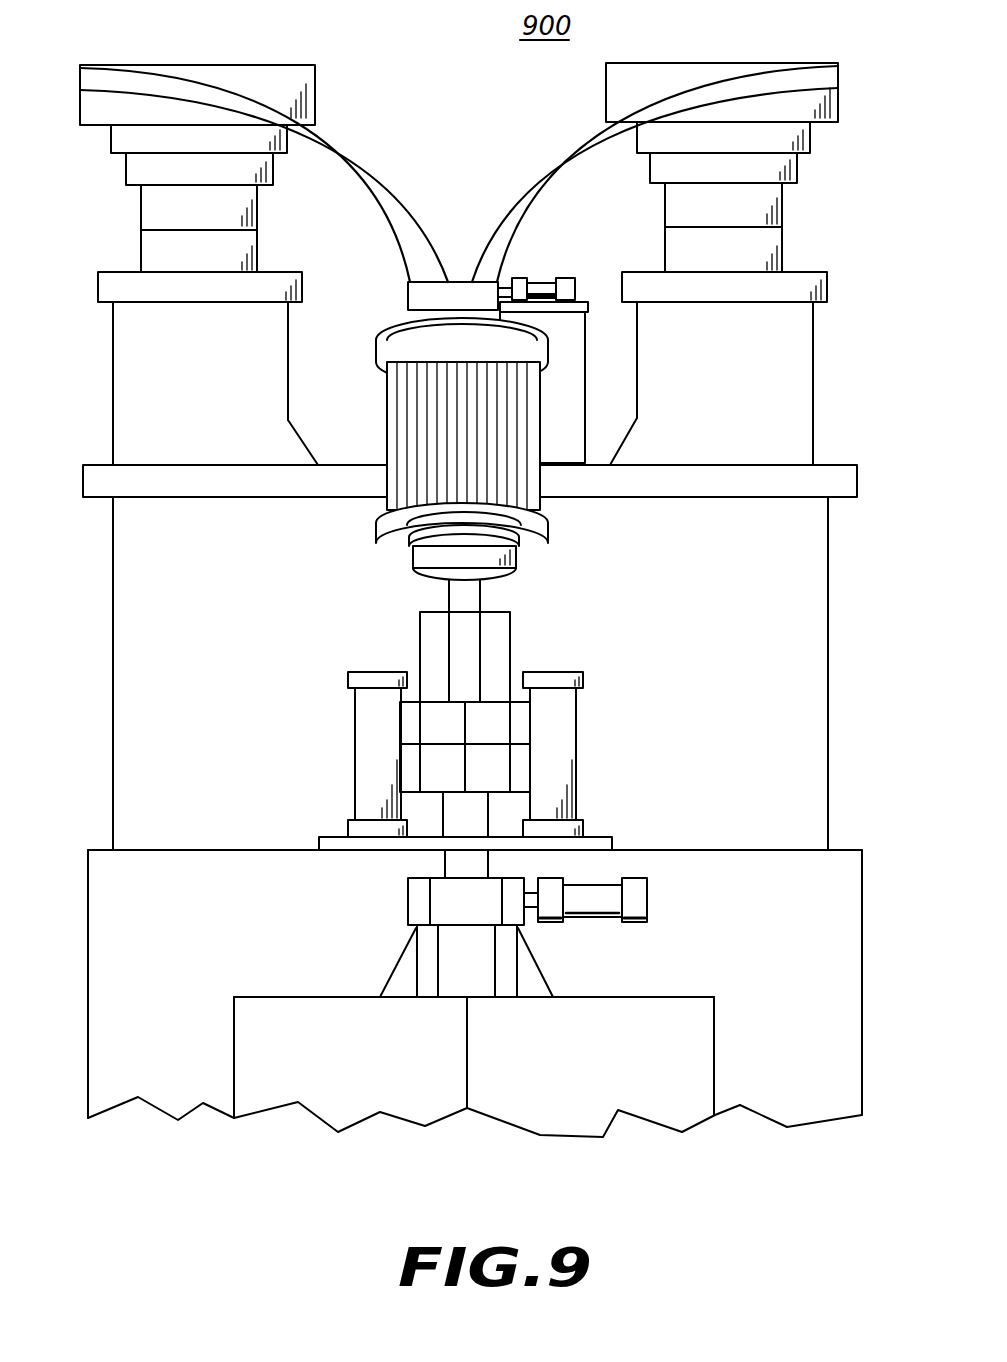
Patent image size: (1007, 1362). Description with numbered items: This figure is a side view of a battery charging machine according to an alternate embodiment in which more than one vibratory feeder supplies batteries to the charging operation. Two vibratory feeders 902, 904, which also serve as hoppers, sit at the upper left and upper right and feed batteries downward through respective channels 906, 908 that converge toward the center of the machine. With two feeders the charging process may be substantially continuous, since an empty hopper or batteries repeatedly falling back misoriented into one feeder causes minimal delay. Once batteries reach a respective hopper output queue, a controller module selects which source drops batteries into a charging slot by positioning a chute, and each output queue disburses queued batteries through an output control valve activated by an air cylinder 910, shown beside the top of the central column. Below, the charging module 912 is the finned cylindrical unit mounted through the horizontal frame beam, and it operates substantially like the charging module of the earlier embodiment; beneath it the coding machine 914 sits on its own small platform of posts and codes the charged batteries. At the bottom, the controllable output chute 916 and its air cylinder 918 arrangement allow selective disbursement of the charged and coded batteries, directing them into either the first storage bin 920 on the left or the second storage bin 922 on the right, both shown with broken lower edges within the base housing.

The vibratory feeder 902 is at (277, 68).
The vibratory feeder 904 is at (630, 68).
The channel 906 is at (357, 160).
The channel 908 is at (543, 180).
The air cylinder 910 is at (535, 278).
The charging module 912 is at (368, 537).
The coding machine 914 is at (503, 779).
The controllable output chute 916 is at (438, 862).
The air cylinder 918 is at (582, 918).
The first storage bin 920 is at (348, 1005).
The second storage bin 922 is at (688, 1002).